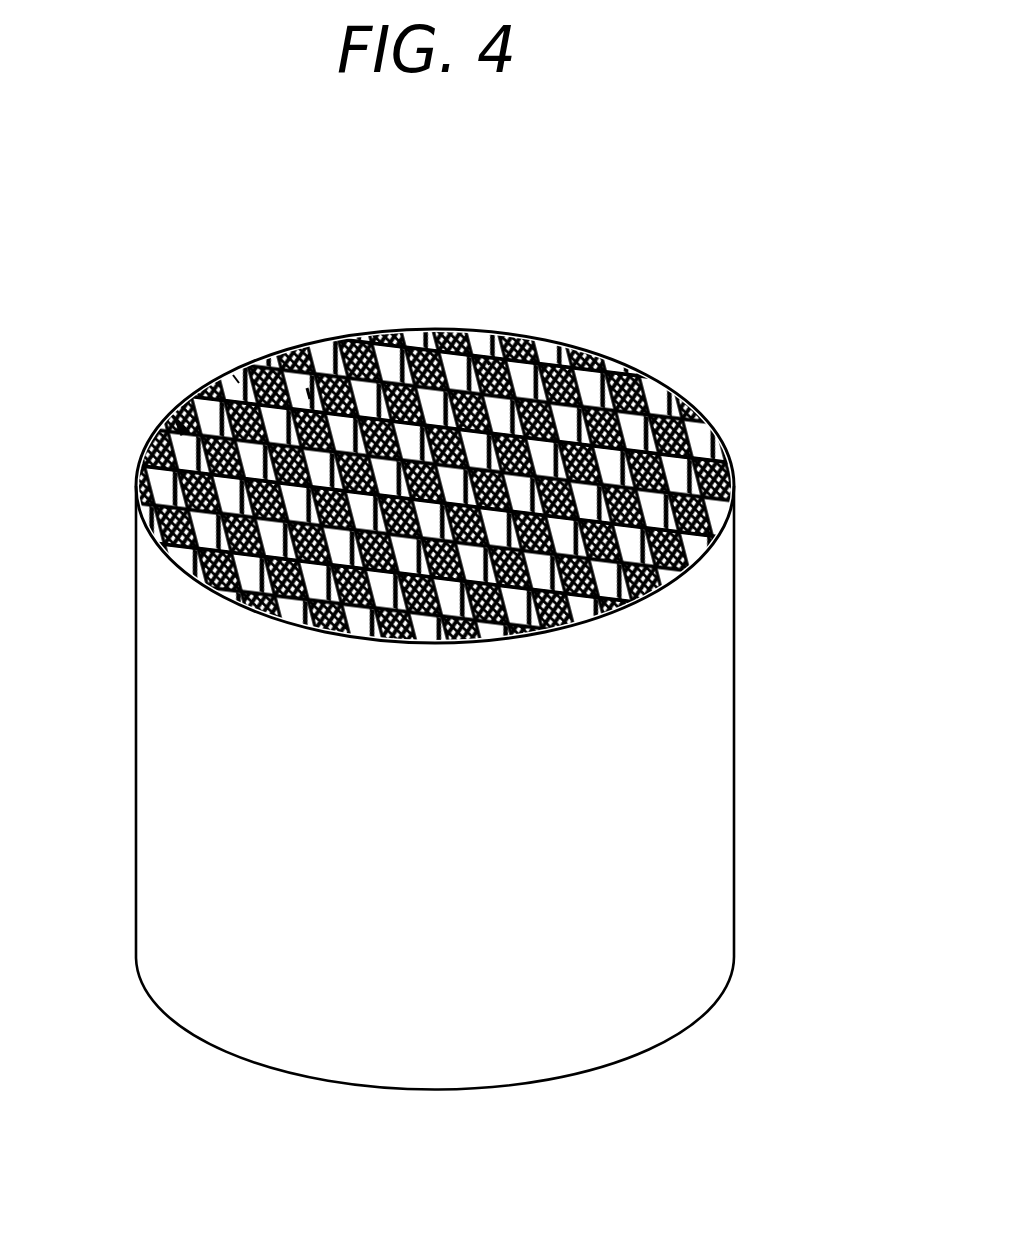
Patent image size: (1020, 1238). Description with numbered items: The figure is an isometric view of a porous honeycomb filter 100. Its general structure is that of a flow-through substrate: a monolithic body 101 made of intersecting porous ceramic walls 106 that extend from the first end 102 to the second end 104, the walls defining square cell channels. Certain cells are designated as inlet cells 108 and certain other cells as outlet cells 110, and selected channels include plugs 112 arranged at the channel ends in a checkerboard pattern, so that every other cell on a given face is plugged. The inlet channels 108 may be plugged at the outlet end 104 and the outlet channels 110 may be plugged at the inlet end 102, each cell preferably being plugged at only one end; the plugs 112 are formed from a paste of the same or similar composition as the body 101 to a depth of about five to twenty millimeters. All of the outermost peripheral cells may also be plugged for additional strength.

The honeycomb filter 100 is at (617, 335).
The body 101 is at (175, 417).
The first end 102 is at (667, 378).
The second end 104 is at (578, 1058).
The porous ceramic walls 106 is at (515, 335).
The inlet cells 108 is at (299, 380).
The outlet cells 110 is at (225, 367).
The plugs 112 is at (347, 352).